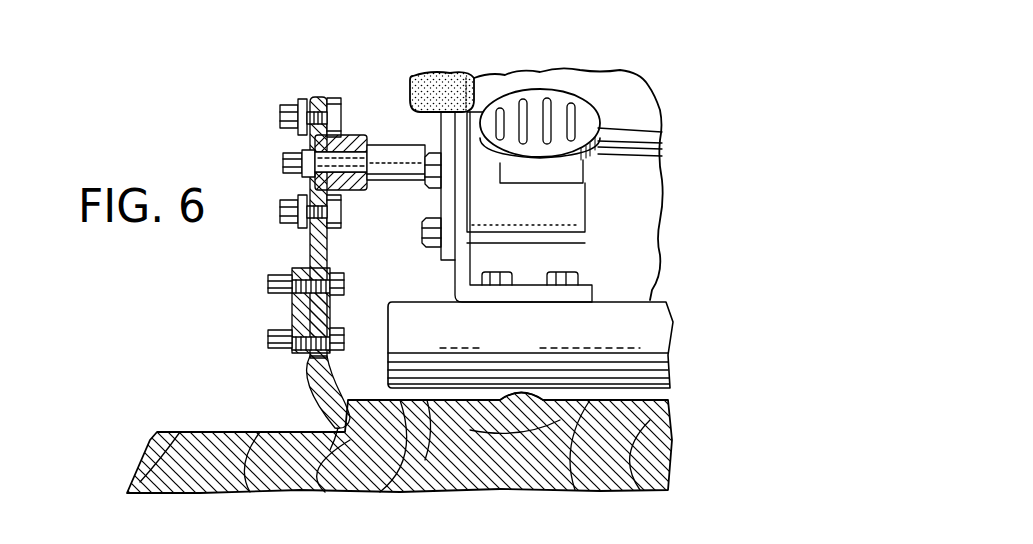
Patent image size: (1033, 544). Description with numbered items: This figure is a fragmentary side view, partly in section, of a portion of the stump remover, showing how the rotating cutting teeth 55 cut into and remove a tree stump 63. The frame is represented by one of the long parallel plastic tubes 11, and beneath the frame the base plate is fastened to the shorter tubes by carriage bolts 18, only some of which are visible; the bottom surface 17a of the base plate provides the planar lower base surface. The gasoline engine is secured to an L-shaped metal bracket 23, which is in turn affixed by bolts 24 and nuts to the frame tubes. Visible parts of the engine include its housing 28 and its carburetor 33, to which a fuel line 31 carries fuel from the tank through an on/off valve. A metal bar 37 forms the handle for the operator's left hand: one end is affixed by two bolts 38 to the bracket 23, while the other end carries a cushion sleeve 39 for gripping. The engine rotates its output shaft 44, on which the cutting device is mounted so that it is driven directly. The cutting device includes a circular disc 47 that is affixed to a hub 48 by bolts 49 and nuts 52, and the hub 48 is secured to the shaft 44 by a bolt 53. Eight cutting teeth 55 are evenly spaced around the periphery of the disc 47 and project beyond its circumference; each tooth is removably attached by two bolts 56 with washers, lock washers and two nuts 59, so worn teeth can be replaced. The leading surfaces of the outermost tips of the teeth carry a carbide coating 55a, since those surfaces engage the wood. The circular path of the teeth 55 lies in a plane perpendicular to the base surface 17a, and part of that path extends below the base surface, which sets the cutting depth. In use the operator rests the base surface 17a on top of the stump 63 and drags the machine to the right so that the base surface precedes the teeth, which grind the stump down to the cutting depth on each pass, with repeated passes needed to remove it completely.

The plastic tube 11 is at (640, 345).
The bottom surface 17a is at (432, 433).
The carriage bolts 18 is at (520, 402).
The L-shaped metal bracket 23 is at (452, 265).
The bolts 24 is at (580, 275).
The housing 28 is at (650, 96).
The fuel line 31 is at (640, 150).
The carburetor 33 is at (537, 100).
The metal bar 37 is at (456, 206).
The bolts 38 is at (428, 190).
The cushion sleeve 39 is at (413, 92).
The output shaft 44 is at (387, 148).
The circular disc 47 is at (310, 250).
The hub 48 is at (353, 137).
The bolts 49 is at (337, 102).
The nuts 52 is at (280, 112).
The bolt 53 is at (283, 164).
The cutting teeth 55 is at (303, 398).
The carbide coating 55a is at (314, 450).
The bolts 56 is at (357, 297).
The nuts 59 is at (268, 338).
The tree stump 63 is at (672, 437).